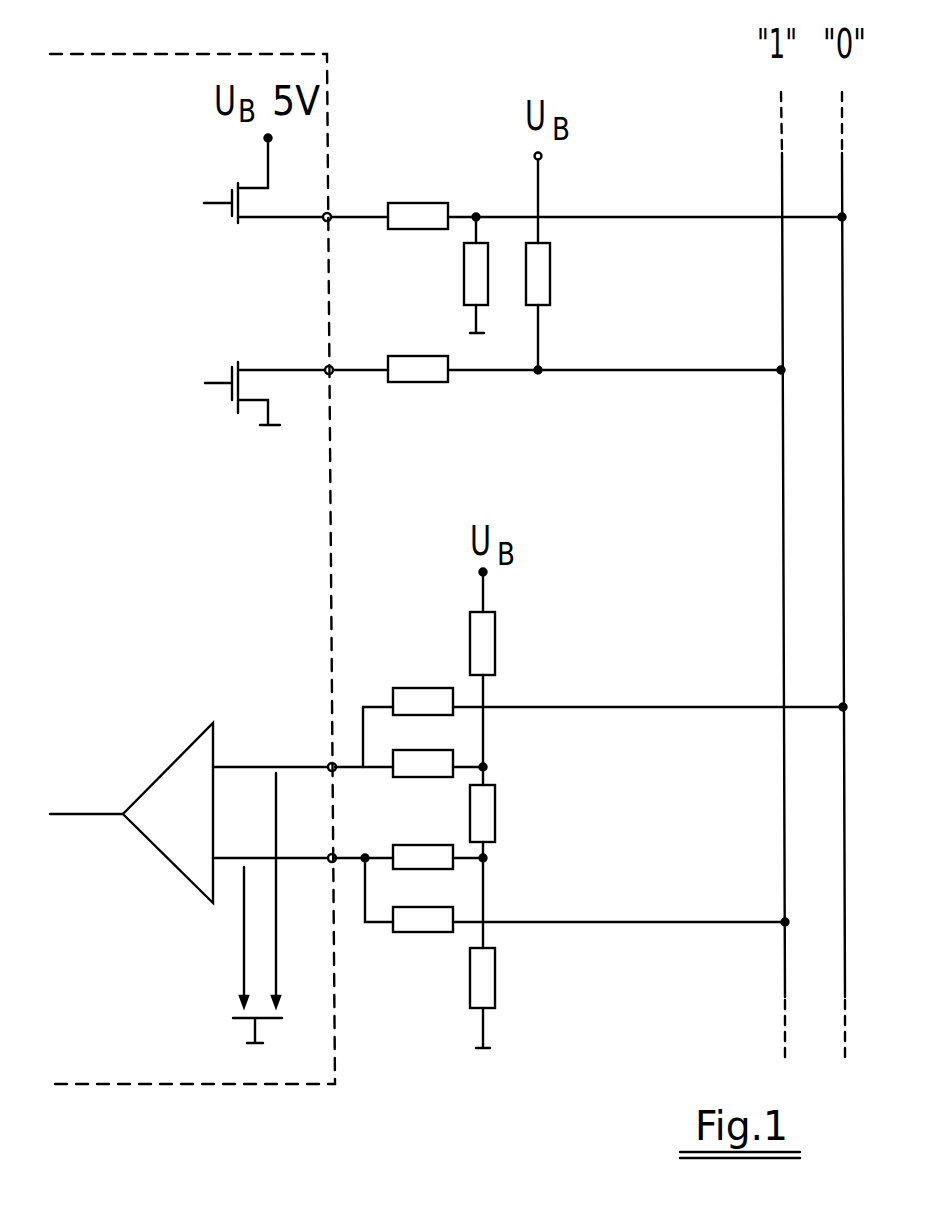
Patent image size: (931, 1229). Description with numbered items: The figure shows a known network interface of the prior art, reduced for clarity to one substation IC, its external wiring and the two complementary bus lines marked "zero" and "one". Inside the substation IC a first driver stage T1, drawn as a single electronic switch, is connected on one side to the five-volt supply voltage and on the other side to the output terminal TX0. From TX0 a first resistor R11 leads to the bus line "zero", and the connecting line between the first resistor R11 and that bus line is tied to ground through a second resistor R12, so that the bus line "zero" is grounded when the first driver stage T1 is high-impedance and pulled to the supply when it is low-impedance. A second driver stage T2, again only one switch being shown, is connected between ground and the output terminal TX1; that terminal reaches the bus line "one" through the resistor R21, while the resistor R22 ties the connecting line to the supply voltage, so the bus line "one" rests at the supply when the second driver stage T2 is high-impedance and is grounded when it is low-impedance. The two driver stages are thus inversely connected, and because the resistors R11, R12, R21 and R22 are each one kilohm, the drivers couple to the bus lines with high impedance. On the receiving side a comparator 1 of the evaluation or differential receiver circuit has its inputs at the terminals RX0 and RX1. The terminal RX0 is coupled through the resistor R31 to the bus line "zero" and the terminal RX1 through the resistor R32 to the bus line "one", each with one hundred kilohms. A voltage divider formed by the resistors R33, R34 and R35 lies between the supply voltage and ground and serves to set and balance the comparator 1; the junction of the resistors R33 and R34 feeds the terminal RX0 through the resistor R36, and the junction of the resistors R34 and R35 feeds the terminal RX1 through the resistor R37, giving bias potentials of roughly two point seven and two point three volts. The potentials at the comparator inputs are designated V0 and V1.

The comparator 1 is at (170, 768).
The first driver stage T1 is at (232, 198).
The second driver stage T2 is at (233, 378).
The output terminal TX0 is at (322, 222).
The output terminal TX1 is at (326, 366).
The terminal RX0 is at (330, 762).
The terminal RX1 is at (334, 855).
The first resistor R11 is at (440, 160).
The second resistor R12 is at (472, 280).
The resistor R21 is at (445, 383).
The resistor R22 is at (548, 283).
The resistor R31 is at (438, 702).
The resistor R32 is at (400, 926).
The resistor R33 is at (490, 650).
The resistor R34 is at (490, 812).
The resistor R35 is at (482, 982).
The resistor R36 is at (445, 757).
The resistor R37 is at (440, 862).
The potential V0 is at (276, 970).
The potential V1 is at (244, 968).
The substation IC is at (192, 569).